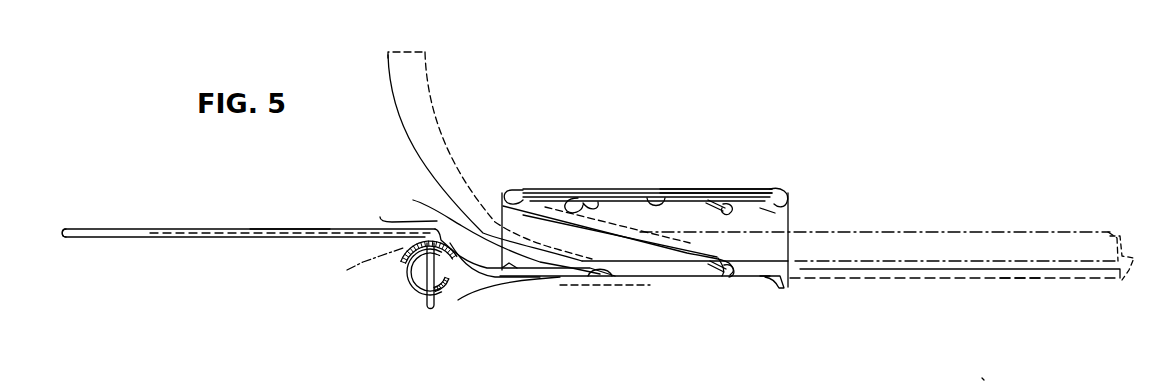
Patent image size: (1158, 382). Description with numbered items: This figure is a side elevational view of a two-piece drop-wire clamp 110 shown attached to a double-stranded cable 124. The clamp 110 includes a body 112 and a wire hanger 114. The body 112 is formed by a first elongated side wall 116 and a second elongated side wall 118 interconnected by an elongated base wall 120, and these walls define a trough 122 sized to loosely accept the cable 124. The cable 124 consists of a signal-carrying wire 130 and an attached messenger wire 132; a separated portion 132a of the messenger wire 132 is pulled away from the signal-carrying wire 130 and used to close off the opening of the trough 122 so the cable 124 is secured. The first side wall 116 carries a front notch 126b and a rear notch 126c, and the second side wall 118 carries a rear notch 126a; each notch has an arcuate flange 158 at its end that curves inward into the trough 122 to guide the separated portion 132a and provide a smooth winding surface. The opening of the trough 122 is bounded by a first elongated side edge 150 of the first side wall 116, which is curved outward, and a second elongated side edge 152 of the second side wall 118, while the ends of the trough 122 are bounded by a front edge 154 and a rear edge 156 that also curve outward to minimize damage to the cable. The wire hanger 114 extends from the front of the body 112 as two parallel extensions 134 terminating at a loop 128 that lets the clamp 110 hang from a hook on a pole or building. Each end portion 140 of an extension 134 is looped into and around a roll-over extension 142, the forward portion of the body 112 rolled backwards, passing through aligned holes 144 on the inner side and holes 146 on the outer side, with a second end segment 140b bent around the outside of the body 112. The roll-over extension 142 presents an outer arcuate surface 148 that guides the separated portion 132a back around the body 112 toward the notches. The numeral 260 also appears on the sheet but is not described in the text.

The two-piece clamp 110 is at (730, 121).
The body 112 is at (746, 186).
The wire hanger 114 is at (156, 246).
The first elongated side wall 116 is at (540, 191).
The second elongated side wall 118 is at (593, 273).
The elongated base wall 120 is at (774, 213).
The trough 122 is at (793, 250).
The signal-carrying cable 124 is at (1020, 227).
The rear notch 126a is at (722, 283).
The front notch 126b is at (512, 190).
The rear notch 126c is at (775, 198).
The loop 128 is at (68, 224).
The signal-carrying wire 130 is at (1123, 271).
The messenger wire 132 is at (1020, 278).
The separated portion of messenger wire 132a is at (350, 263).
The parallel extensions 134 is at (287, 229).
The end portions 140 is at (429, 319).
The second end segment 140b is at (480, 280).
The roll-over extension 142 is at (406, 304).
The holes 144 is at (380, 217).
The holes 146 is at (443, 301).
The outer arcuate surface 148 is at (404, 276).
The first elongated side edge 150 is at (660, 190).
The second elongated side edge 152 is at (653, 286).
The front edge 154 is at (413, 200).
The rear edge 156 is at (749, 224).
The arcuate flange 158 is at (603, 207).
The reference 260 is at (1000, 374).